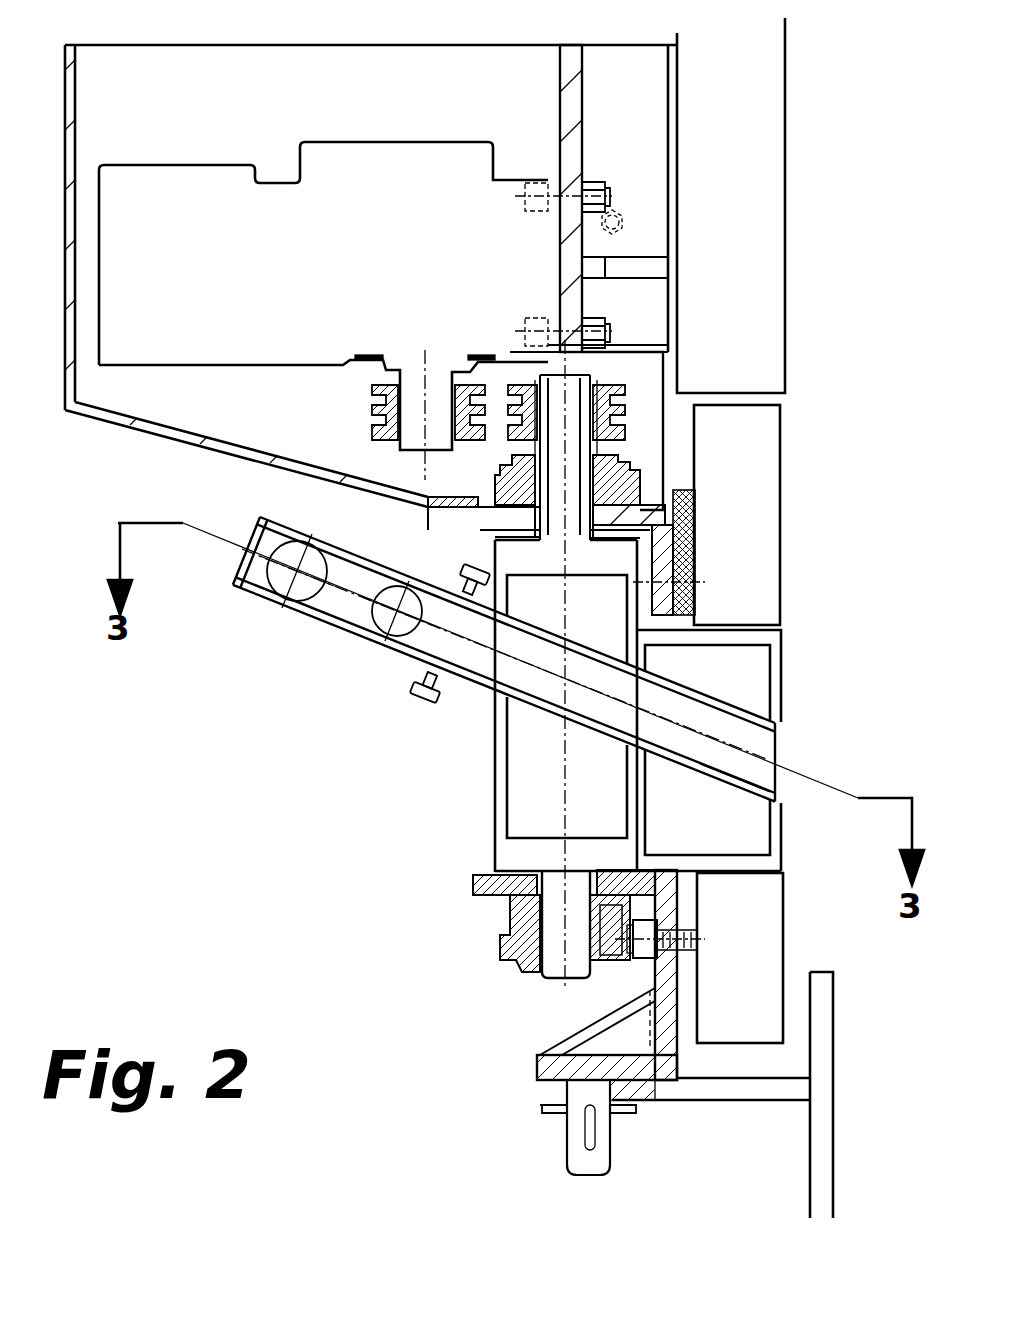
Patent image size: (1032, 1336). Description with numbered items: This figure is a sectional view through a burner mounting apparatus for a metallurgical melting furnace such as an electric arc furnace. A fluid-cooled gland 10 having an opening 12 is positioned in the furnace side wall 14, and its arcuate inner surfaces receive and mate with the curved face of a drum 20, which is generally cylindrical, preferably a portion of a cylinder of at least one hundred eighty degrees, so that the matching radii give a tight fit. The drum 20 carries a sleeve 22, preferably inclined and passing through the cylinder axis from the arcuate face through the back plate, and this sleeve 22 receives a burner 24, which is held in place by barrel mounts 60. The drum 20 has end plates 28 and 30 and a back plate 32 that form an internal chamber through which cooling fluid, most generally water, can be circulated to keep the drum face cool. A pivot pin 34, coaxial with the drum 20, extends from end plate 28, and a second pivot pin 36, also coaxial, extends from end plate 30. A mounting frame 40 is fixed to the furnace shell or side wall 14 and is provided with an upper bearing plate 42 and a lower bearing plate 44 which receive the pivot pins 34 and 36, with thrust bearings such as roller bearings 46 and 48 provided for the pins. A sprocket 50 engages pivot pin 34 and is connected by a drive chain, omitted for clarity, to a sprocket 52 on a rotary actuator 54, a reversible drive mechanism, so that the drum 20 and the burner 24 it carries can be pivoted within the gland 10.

The fluid-cooled gland 10 is at (786, 468).
The opening 12 is at (745, 640).
The side wall 14 is at (810, 1158).
The drum 20 is at (784, 690).
The sleeve 22 is at (765, 792).
The burner 24 is at (778, 756).
The end plate 28 is at (497, 555).
The end plate 30 is at (500, 852).
The back plate 32 is at (496, 772).
The pivot pin 34 is at (585, 470).
The second pivot pin 36 is at (556, 978).
The mounting frame 40 is at (571, 46).
The upper bearing plate 42 is at (432, 512).
The lower bearing plate 44 is at (478, 893).
The roller bearing 46 is at (508, 482).
The roller bearing 48 is at (512, 956).
The sprocket 50 is at (595, 395).
The sprocket 52 is at (370, 410).
The rotary actuator 54 is at (388, 268).
The barrel mounts 60 is at (428, 700).